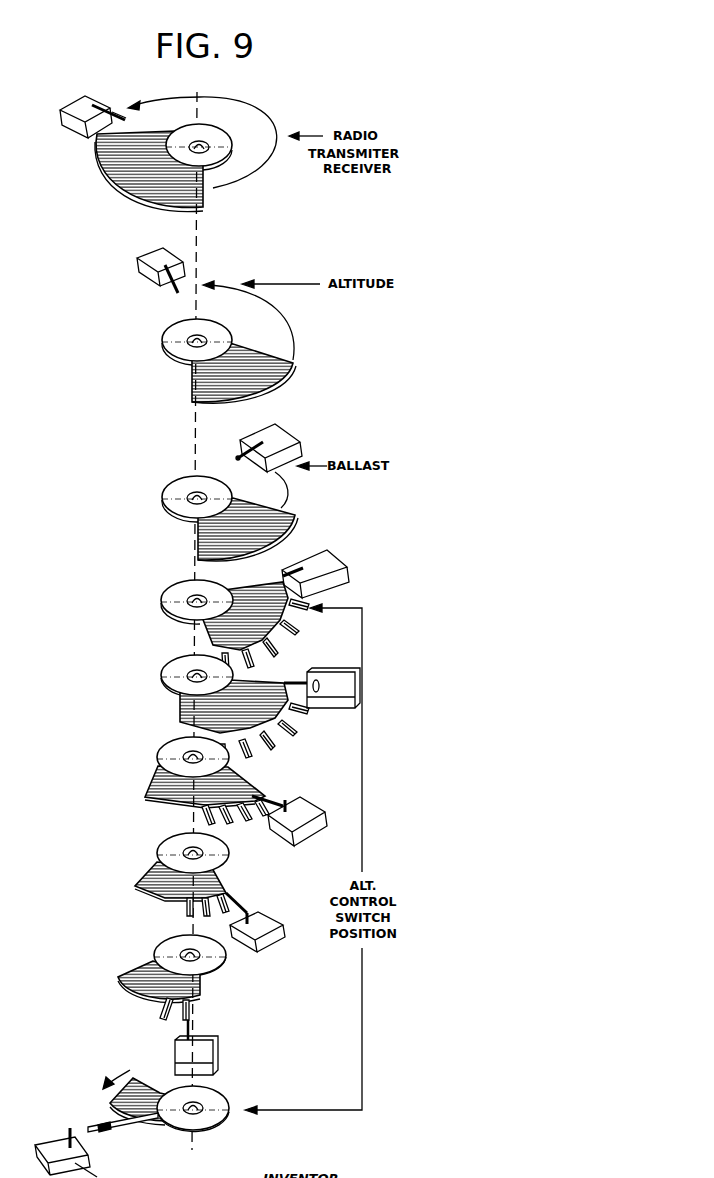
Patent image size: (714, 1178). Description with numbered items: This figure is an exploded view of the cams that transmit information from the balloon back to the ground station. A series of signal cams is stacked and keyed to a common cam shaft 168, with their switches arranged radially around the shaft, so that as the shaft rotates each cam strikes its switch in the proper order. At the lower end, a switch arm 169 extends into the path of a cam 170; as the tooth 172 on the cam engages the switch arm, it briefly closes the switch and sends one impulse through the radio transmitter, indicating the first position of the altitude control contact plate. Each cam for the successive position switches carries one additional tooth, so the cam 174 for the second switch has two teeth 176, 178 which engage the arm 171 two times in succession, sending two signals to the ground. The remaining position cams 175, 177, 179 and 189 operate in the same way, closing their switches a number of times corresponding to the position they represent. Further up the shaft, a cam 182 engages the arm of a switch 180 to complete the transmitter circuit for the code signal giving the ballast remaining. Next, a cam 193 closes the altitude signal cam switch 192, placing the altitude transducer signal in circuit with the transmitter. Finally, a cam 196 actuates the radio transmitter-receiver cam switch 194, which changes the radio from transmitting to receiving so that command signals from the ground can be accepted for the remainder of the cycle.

The radio transmitter-receiver cam switch 194 is at (80, 129).
The cam 196 is at (203, 197).
The altitude signal cam switch 192 is at (137, 262).
The cam 193 is at (293, 362).
The switch 180 is at (282, 437).
The cam 182 is at (163, 507).
The switch position 6 cam 189 is at (163, 592).
The cam 179 is at (163, 677).
The cam shaft 168 is at (190, 733).
The cam 177 is at (148, 788).
The cam 175 is at (215, 874).
The cam 174 is at (207, 970).
The tooth 178 is at (160, 1010).
The tooth 176 is at (180, 1018).
The arm 171 is at (192, 1025).
The cam 170 is at (137, 1080).
The tooth 172 is at (103, 1120).
The switch arm 169 is at (72, 1133).